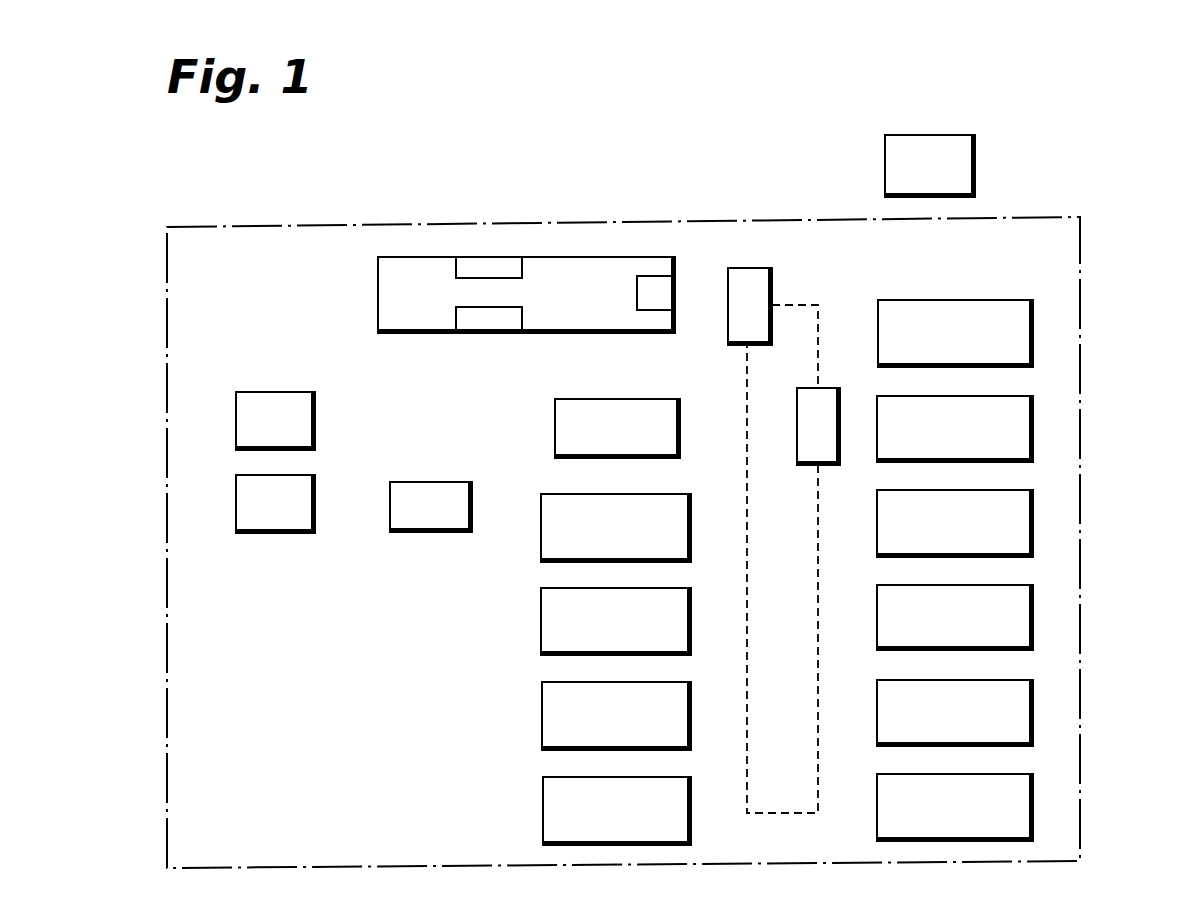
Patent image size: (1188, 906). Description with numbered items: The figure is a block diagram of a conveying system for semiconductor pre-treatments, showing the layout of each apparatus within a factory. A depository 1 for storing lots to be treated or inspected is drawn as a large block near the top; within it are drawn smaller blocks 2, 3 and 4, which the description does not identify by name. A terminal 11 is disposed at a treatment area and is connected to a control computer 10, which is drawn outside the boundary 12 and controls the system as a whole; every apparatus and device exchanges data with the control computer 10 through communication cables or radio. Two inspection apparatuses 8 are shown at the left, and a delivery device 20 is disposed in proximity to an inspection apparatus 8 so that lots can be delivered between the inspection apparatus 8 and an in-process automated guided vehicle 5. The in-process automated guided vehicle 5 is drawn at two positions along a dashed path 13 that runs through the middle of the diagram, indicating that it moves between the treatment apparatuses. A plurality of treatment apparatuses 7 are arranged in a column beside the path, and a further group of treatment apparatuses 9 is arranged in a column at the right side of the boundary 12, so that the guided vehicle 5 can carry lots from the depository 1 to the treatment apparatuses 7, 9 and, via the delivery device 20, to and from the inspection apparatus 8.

The depository 1 is at (378, 284).
The input section 2 is at (500, 320).
The output section 3 is at (483, 257).
The control section 4 is at (662, 300).
The in-process automated guided vehicle 5 is at (772, 286).
The treatment apparatus 7 is at (541, 519).
The inspection apparatus 8 is at (316, 500).
The treatment apparatus 9 is at (1033, 522).
The control computer 10 is at (978, 163).
The terminal 11 is at (432, 482).
The installation area boundary 12 is at (1083, 270).
The transfer path 13 is at (820, 320).
The delivery device 20 is at (646, 399).